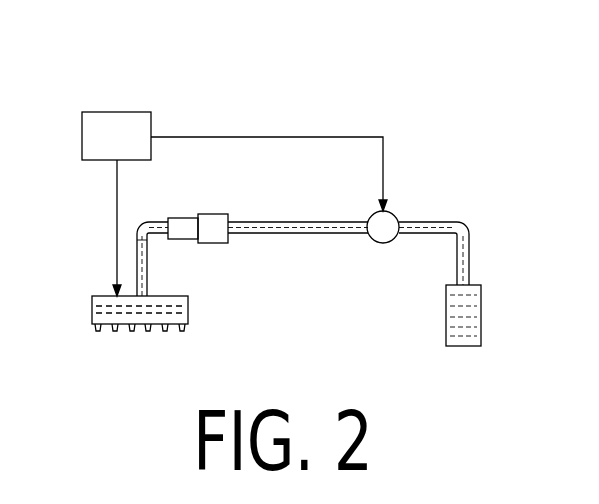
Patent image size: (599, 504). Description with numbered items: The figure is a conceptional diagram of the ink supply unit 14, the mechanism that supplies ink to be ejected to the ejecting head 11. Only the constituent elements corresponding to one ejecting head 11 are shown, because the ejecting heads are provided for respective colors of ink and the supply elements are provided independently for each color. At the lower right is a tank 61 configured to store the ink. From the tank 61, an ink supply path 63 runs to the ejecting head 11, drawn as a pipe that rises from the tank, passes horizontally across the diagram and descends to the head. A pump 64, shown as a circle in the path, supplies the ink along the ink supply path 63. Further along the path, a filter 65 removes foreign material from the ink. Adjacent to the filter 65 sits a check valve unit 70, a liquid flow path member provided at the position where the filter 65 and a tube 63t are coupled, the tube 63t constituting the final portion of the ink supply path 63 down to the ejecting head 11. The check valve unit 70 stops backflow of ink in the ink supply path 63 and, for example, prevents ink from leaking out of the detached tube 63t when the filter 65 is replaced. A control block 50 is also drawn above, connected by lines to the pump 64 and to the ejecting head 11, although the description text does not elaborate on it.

The ink supply unit 14 is at (439, 73).
The controller 50 is at (88, 127).
The ejecting head 11 is at (92, 313).
The ink supply path 63 is at (292, 224).
The tube 63t is at (148, 241).
The check valve unit 70 is at (180, 220).
The filter 65 is at (220, 218).
The pump 64 is at (390, 236).
The tank 61 is at (482, 317).